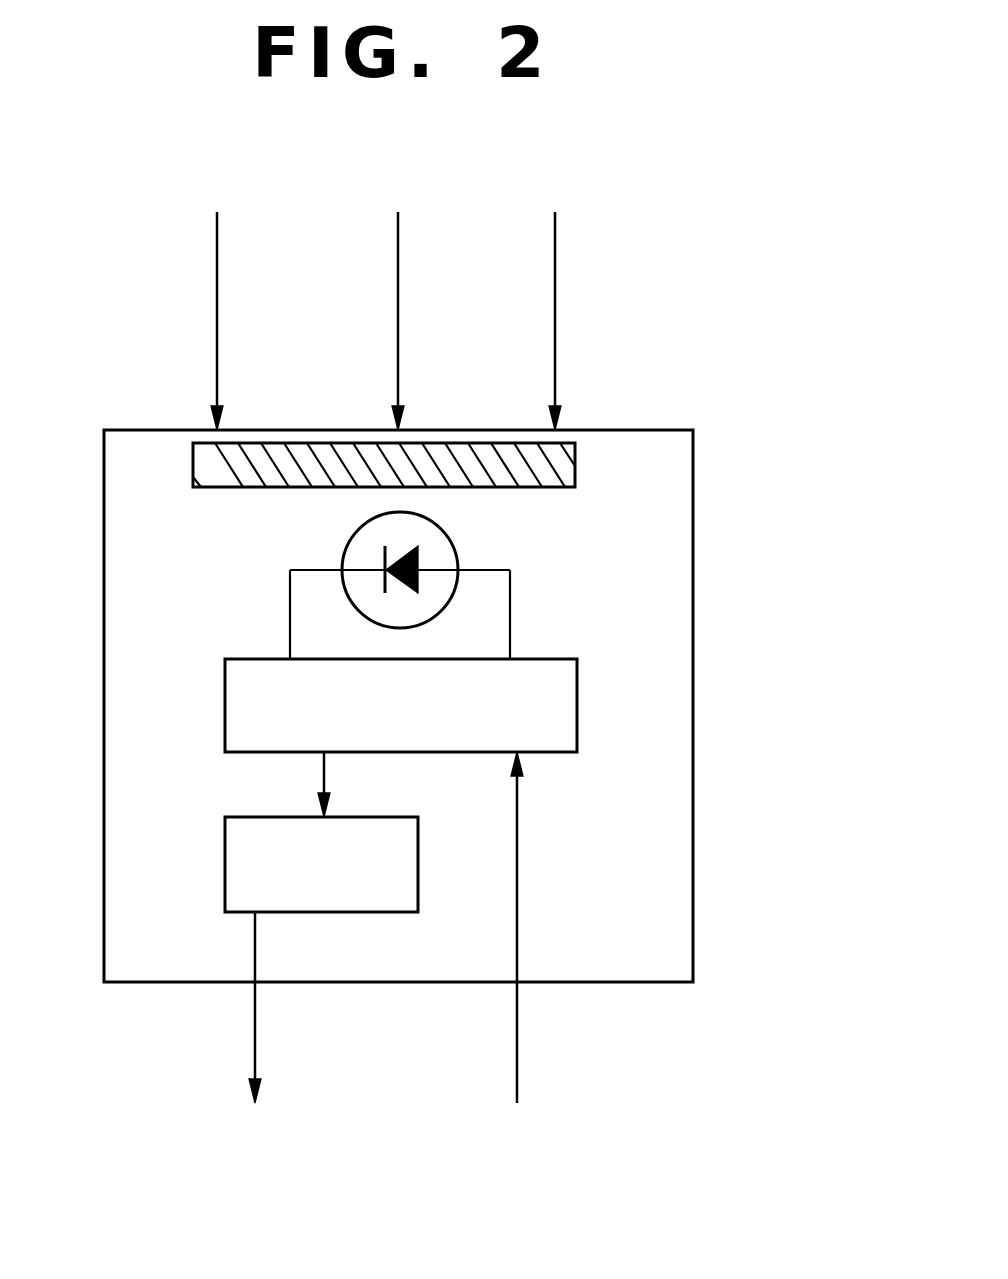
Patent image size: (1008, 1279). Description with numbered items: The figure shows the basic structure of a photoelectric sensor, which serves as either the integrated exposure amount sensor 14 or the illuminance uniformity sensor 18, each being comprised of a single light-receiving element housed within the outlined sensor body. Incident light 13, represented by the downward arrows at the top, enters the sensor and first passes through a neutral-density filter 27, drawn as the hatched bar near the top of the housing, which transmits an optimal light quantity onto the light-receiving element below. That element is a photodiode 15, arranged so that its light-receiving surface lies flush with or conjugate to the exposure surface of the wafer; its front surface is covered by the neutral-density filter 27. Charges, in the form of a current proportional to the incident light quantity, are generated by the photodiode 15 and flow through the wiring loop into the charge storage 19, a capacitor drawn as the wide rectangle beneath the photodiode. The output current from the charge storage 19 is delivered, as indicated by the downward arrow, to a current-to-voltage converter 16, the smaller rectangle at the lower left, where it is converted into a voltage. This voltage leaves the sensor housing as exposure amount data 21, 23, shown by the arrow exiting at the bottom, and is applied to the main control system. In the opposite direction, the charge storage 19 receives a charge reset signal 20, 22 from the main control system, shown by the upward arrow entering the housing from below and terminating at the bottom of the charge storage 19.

The incident light 13 is at (556, 318).
The neutral-density filter 27 is at (575, 462).
The photodiode 15 is at (447, 527).
The charge storage 19 is at (577, 703).
The current-to-voltage converter 16 is at (418, 838).
The integrated exposure amount sensor 14 is at (502, 706).
The illuminance uniformity sensor 18 is at (693, 896).
The exposure amount data 21 is at (159, 1007).
The exposure amount data 23 is at (255, 1040).
The charge reset signal 20 is at (619, 927).
The charge reset signal 22 is at (518, 1045).